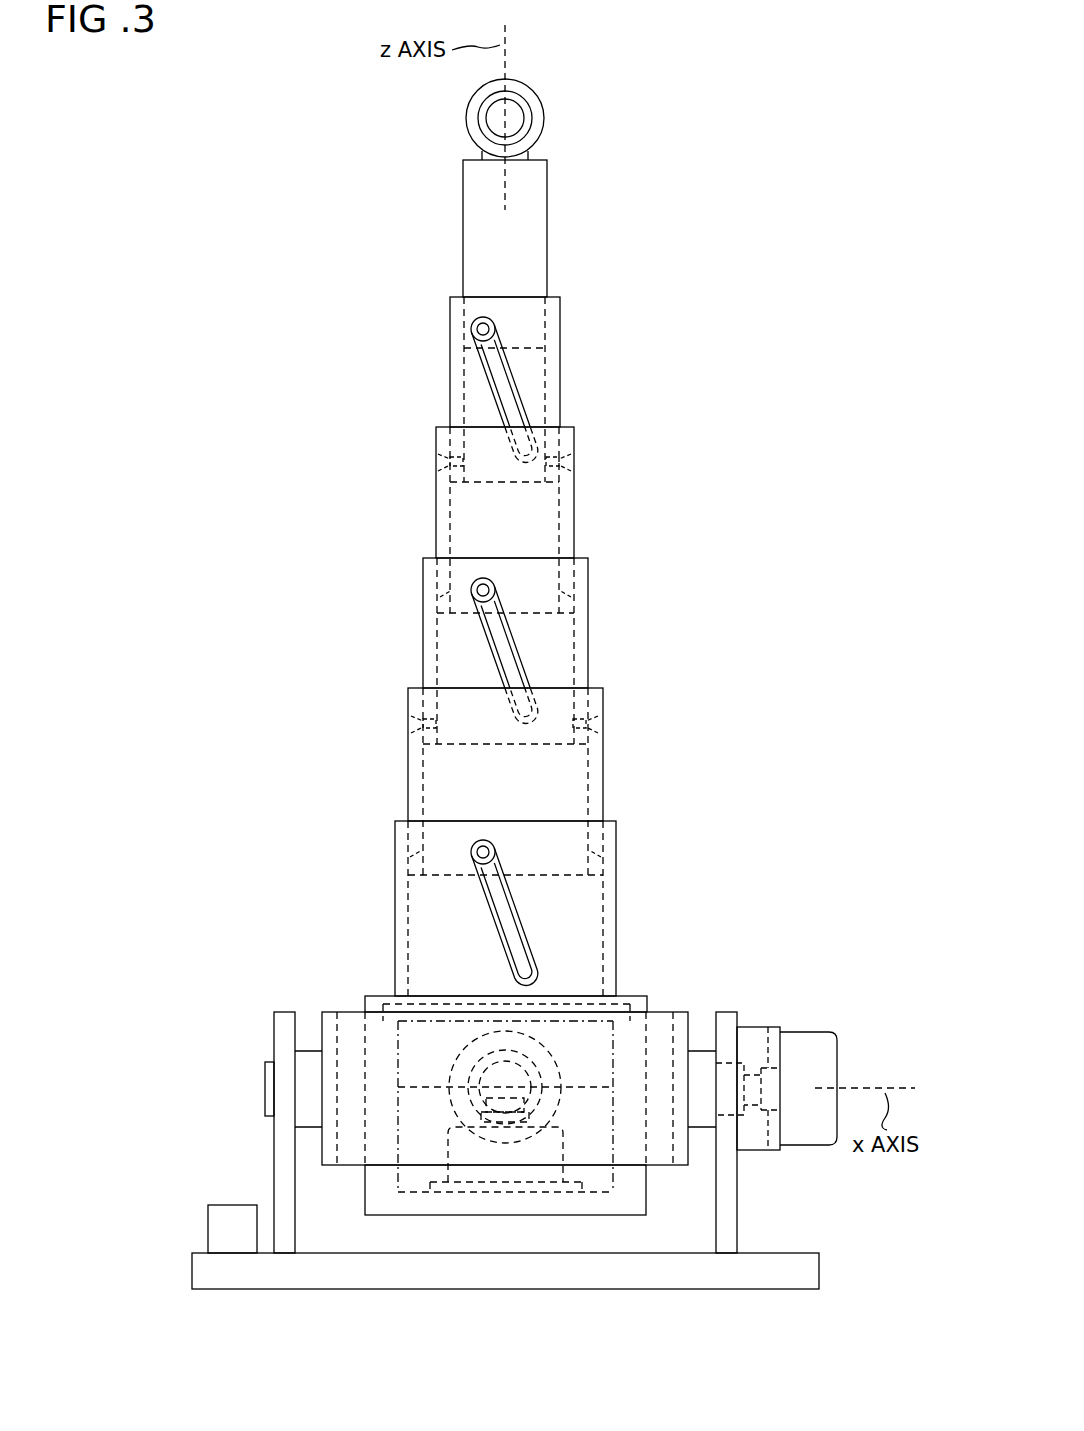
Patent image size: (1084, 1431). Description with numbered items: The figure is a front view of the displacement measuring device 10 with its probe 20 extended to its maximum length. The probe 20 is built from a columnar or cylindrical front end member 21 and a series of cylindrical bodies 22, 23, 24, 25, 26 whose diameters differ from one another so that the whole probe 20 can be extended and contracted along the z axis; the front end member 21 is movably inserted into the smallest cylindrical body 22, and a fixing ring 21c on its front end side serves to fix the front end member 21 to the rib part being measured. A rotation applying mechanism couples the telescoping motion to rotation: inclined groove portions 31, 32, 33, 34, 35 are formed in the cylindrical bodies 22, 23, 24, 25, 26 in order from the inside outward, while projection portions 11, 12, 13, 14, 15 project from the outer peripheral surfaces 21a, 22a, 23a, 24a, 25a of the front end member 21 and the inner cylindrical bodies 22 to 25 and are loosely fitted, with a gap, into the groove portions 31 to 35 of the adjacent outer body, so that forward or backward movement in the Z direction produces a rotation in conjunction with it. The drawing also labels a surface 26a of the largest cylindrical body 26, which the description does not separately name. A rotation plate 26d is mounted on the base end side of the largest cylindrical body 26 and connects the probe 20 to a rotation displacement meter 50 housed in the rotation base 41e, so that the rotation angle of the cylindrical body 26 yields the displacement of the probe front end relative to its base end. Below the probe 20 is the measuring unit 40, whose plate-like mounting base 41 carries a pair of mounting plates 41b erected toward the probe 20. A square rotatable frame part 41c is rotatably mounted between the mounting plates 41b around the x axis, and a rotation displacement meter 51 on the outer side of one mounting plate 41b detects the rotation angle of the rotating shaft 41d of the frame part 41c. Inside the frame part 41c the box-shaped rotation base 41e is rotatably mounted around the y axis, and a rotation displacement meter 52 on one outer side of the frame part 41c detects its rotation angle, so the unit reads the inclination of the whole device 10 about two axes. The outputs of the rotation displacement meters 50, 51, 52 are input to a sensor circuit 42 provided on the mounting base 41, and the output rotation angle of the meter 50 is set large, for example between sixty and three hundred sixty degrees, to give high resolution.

The displacement measuring device 10 is at (253, 308).
The probe 20 is at (357, 412).
The front end member 21 is at (571, 248).
The outer peripheral surface 21a is at (547, 205).
The fixing ring 21c is at (543, 120).
The cylindrical body 22 is at (596, 388).
The outer peripheral surface 22a is at (560, 343).
The cylindrical body 23 is at (609, 526).
The outer peripheral surface 23a is at (574, 480).
The cylindrical body 24 is at (621, 646).
The outer peripheral surface 24a is at (588, 603).
The cylindrical body 25 is at (634, 786).
The outer peripheral surface 25a is at (603, 742).
The cylindrical body 26 is at (649, 910).
The sixth tube upper portion 26a is at (616, 867).
The rotation plate 26d is at (646, 1010).
The projection portion 11 is at (470, 328).
The projection portion 12 is at (440, 462).
The projection portion 13 is at (470, 590).
The projection portion 14 is at (412, 722).
The projection portion 15 is at (470, 851).
The inclined groove portion 31 is at (498, 372).
The inclined groove portion 32 is at (440, 510).
The inclined groove portion 33 is at (500, 648).
The inclined groove portion 34 is at (412, 773).
The inclined groove portion 35 is at (500, 912).
The measuring unit 40 is at (884, 1014).
The mounting base 41 is at (205, 1275).
The mounting plates 41b is at (284, 1038).
The rotatable frame part 41c is at (330, 1143).
The rotating shaft 41d is at (703, 1118).
The rotation base 41e is at (408, 1203).
The sensor circuit 42 is at (218, 1222).
The rotation displacement meter 50 is at (506, 1172).
The rotation displacement meter 51 is at (808, 1020).
The rotation displacement meter 52 is at (560, 1097).